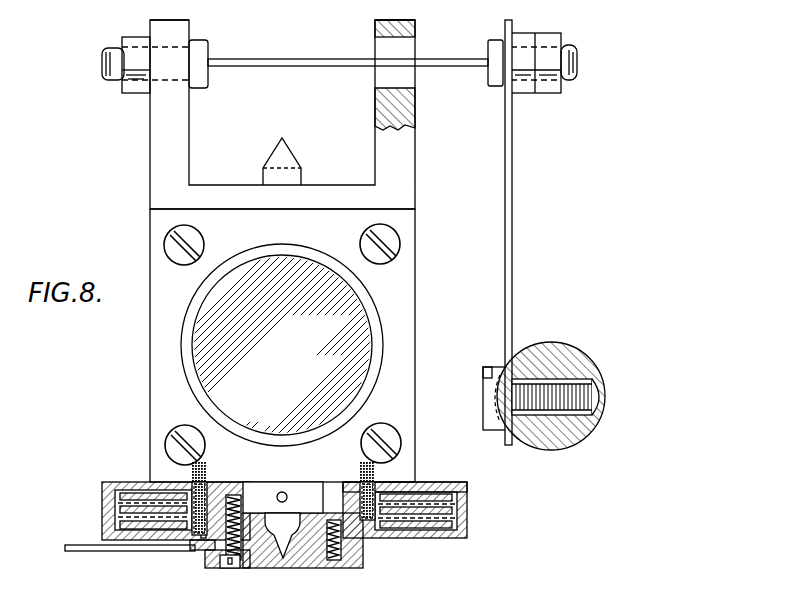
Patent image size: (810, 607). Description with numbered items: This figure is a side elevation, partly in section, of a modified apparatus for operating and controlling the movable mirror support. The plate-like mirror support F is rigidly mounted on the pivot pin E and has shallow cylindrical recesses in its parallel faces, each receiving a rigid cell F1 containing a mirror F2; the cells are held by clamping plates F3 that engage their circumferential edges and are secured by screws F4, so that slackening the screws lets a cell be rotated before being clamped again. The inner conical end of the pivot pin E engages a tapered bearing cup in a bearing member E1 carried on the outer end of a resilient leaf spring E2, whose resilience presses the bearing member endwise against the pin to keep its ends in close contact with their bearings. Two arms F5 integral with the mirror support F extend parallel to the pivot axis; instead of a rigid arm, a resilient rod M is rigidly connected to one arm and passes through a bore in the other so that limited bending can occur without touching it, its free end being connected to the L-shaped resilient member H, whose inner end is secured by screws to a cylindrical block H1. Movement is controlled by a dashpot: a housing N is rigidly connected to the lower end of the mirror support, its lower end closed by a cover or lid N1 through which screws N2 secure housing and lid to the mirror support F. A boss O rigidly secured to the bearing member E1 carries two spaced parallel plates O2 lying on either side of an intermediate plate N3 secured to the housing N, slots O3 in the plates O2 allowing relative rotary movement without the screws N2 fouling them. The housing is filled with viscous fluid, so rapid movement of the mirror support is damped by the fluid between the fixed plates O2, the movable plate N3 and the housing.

The resilient rod M is at (312, 65).
The plate-like mirror support F is at (178, 204).
The rigid cell F1 is at (358, 283).
The mirror F2 is at (340, 323).
The clamping plate F3 is at (393, 376).
The screws F4 is at (178, 250).
The arms F5 is at (170, 134).
The pivot pin E is at (285, 176).
The bearing member E1 is at (262, 568).
The resilient leaf spring E2 is at (97, 550).
The L-shaped resilient member H is at (505, 203).
The cylindrical block H1 is at (550, 357).
The housing N is at (135, 482).
The cover or lid N1 is at (452, 530).
The screws N2 is at (205, 487).
The intermediate plate N3 is at (467, 484).
The boss O is at (370, 522).
The spaced parallel plates O2 is at (442, 494).
The slots O3 is at (185, 494).